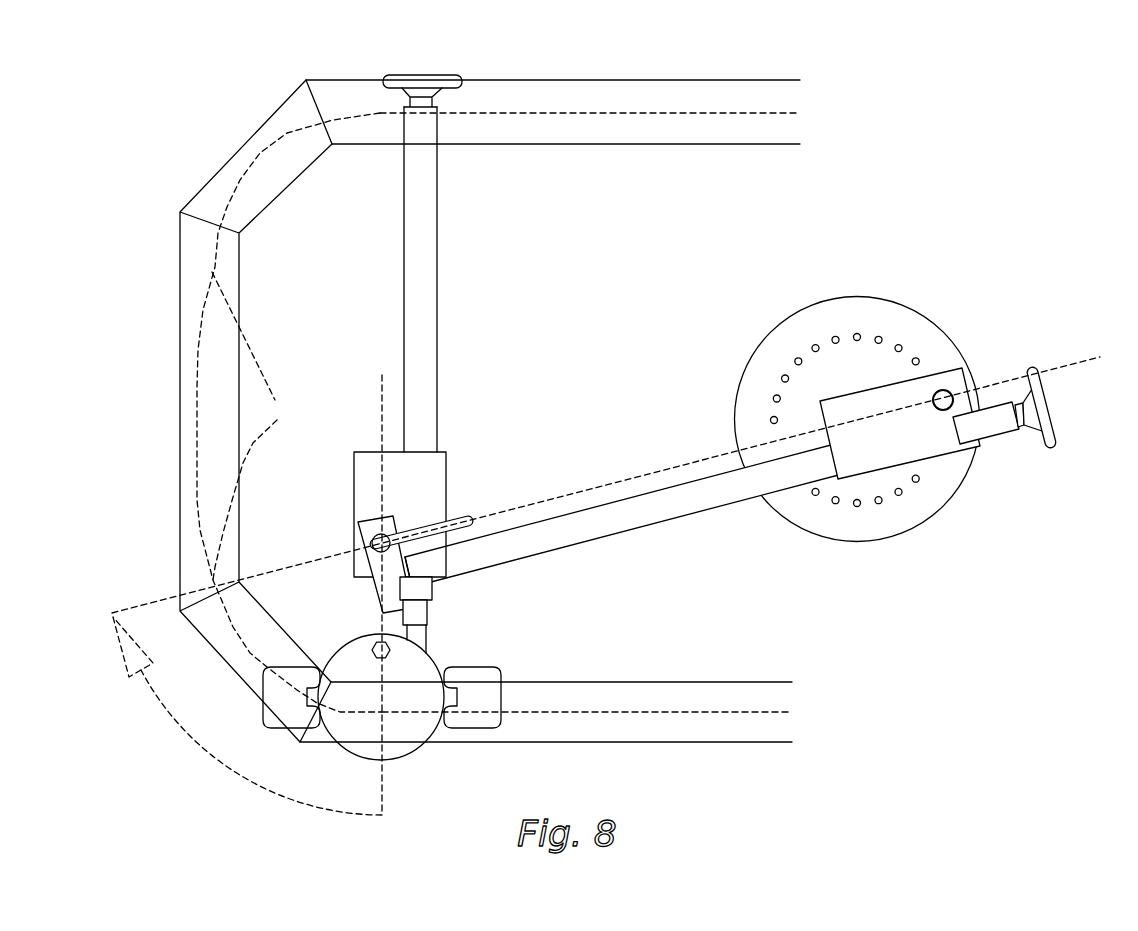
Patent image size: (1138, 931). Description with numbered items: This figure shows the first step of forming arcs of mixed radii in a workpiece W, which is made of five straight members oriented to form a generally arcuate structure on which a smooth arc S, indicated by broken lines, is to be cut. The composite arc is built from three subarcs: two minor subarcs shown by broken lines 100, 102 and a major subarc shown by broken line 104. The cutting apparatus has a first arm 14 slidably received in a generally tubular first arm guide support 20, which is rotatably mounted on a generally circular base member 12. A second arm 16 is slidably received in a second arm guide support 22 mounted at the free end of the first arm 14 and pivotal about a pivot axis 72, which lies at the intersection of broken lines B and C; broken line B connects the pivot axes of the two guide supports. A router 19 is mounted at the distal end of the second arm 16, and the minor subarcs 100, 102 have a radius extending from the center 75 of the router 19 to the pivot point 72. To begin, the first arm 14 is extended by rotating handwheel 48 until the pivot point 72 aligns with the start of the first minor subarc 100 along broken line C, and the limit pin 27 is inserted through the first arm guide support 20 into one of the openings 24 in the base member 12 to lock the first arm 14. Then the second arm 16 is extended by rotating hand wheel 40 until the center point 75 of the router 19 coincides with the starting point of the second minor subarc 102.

The base member 12 is at (783, 350).
The first arm 14 is at (655, 510).
The second arm 16 is at (425, 260).
The router 19 is at (393, 750).
The first arm guide support 20 is at (917, 452).
The second arm guide support 22 is at (432, 480).
The openings 24 is at (838, 336).
The limit pin 27 is at (942, 392).
The hand wheel 40 is at (405, 73).
The handwheel 48 is at (1052, 430).
The pivot axis 72 is at (370, 542).
The center 75 is at (383, 707).
The first minor subarc 100 is at (252, 442).
The second minor subarc 102 is at (258, 385).
The major subarc 104 is at (197, 383).
The broken line B is at (628, 478).
The broken line C is at (382, 425).
The smooth arc S is at (700, 712).
The workpiece W is at (572, 87).